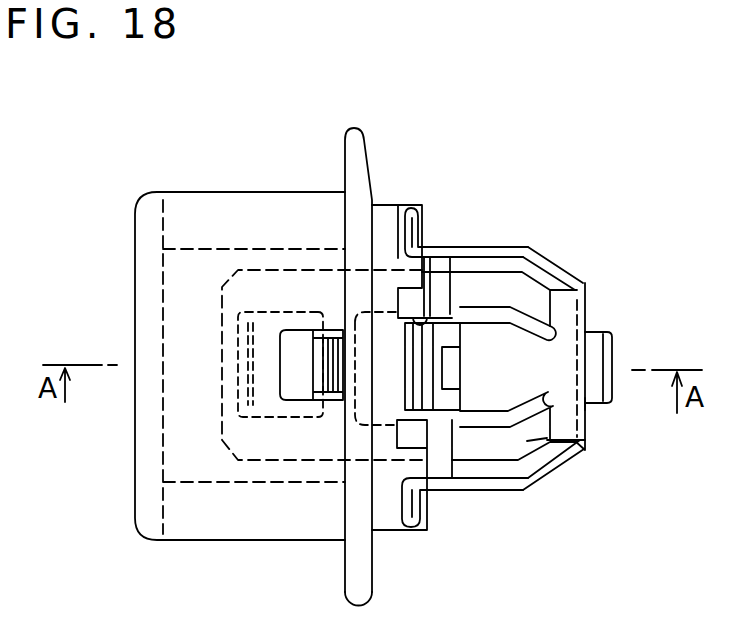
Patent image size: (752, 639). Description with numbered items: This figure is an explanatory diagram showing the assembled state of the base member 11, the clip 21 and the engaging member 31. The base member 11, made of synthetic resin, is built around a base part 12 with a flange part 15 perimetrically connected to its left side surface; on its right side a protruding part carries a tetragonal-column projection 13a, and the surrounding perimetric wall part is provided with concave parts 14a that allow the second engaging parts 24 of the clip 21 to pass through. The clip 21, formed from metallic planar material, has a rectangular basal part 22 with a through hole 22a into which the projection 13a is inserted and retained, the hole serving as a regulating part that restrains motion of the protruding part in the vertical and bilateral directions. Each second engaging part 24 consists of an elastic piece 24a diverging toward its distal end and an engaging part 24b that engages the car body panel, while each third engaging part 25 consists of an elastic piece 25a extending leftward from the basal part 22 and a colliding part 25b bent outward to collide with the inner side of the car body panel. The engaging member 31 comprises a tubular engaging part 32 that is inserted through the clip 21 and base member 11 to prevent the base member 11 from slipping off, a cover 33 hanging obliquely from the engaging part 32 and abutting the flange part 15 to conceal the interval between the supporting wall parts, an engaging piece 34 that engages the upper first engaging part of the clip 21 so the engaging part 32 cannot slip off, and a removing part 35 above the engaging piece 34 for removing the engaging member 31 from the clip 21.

The base member 11 is at (366, 150).
The base part 12 is at (384, 517).
The projection 13a is at (596, 346).
The concave part 14a is at (432, 340).
The flange part 15 is at (357, 564).
The clip 21 is at (556, 476).
The basal part 22 is at (588, 452).
The through hole 22a is at (591, 404).
The second engaging part 24 is at (553, 175).
The elastic piece 24a is at (537, 290).
The engaging part 24b is at (502, 350).
The third engaging part 25 is at (418, 325).
The elastic piece 25a is at (528, 488).
The colliding part 25b is at (424, 512).
The engaging member 31 is at (132, 184).
The engaging part 32 is at (292, 350).
The cover 33 is at (143, 472).
The engaging piece 34 is at (331, 401).
The removing part 35 is at (312, 366).